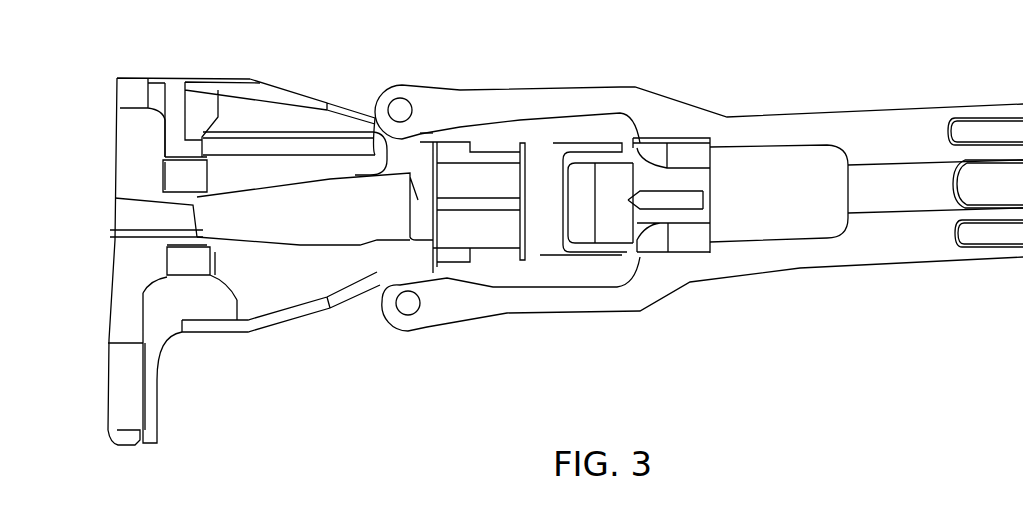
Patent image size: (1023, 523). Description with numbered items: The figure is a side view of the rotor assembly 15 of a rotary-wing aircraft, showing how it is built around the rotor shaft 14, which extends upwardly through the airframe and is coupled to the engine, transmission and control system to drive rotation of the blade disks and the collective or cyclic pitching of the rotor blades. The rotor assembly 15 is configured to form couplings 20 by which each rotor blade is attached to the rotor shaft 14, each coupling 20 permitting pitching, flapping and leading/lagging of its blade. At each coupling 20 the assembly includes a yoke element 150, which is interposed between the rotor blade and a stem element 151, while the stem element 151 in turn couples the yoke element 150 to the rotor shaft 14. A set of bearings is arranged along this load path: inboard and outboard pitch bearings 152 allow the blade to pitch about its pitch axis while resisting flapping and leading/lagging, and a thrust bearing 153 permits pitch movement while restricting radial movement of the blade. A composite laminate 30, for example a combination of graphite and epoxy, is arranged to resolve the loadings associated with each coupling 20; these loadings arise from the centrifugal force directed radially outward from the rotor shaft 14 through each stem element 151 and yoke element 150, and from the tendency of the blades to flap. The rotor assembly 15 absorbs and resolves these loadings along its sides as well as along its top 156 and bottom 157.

The rotor shaft 14 is at (152, 378).
The rotor assembly 15 is at (108, 82).
The coupling 20 is at (777, 88).
The composite laminate 30 is at (276, 90).
The yoke element 150 is at (835, 255).
The stem element 151 is at (350, 172).
The pitch bearing 152 is at (198, 266).
The thrust bearing 153 is at (488, 177).
The top 156 is at (207, 84).
The bottom 157 is at (312, 310).